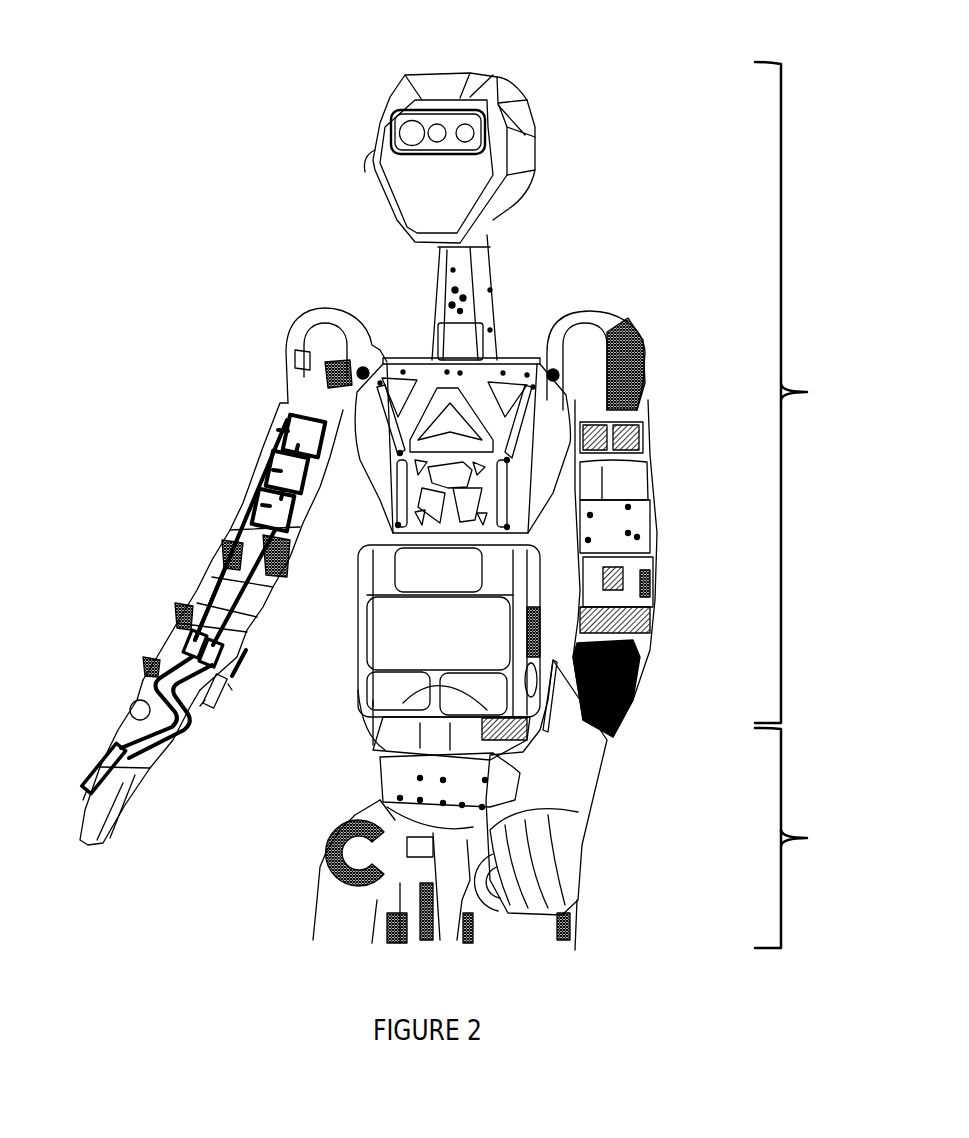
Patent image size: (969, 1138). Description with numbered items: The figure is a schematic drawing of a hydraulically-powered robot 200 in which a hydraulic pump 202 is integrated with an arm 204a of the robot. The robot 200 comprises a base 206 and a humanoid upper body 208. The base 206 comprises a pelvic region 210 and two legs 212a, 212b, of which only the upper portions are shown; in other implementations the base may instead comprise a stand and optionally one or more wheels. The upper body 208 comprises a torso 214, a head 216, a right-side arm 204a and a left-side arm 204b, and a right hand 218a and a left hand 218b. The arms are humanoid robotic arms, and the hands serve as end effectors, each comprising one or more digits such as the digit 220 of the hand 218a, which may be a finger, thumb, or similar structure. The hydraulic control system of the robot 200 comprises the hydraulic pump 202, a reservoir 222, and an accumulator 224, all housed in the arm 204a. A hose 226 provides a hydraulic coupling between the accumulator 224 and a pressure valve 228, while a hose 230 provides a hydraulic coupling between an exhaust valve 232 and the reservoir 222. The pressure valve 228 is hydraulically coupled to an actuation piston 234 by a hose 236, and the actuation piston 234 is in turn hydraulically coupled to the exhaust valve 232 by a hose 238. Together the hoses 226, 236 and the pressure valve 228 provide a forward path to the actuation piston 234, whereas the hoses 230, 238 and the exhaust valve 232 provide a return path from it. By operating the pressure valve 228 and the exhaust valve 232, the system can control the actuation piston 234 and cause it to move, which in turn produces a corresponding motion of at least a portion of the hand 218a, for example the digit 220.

The hydraulically-powered robot 200 is at (214, 58).
The hydraulic pump 202 is at (276, 468).
The right-side arm 204a is at (227, 543).
The left-side arm 204b is at (634, 484).
The base 206 is at (816, 838).
The humanoid upper body 208 is at (812, 392).
The pelvic region 210 is at (473, 791).
The leg 212a is at (320, 914).
The leg 212b is at (576, 928).
The torso 214 is at (382, 697).
The head 216 is at (381, 172).
The right hand 218a is at (112, 843).
The left hand 218b is at (586, 847).
The digit 220 is at (72, 800).
The reservoir 222 is at (293, 420).
The accumulator 224 is at (260, 498).
The hose 226 is at (240, 596).
The pressure valve 228 is at (226, 674).
The hose 230 is at (210, 592).
The exhaust valve 232 is at (190, 652).
The actuation piston 234 is at (94, 770).
The hose 236 is at (170, 738).
The hose 238 is at (142, 690).